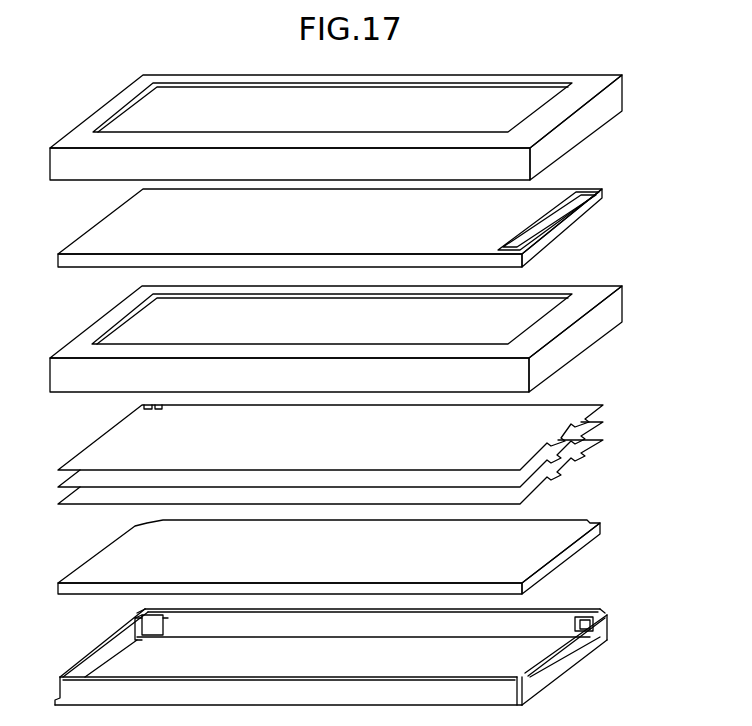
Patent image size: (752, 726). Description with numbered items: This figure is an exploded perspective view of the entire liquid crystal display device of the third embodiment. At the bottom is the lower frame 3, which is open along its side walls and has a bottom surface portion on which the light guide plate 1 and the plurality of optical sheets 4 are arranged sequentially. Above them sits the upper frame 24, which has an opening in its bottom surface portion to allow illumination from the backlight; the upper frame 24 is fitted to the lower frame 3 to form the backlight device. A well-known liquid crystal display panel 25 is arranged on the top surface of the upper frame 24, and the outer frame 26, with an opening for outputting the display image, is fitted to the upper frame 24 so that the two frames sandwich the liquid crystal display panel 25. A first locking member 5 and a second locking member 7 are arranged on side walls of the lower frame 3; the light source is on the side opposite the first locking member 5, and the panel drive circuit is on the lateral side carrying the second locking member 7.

The outer frame 26 is at (608, 98).
The liquid crystal display panel 25 is at (605, 190).
The upper frame 24 is at (612, 312).
The optical sheets 4 is at (618, 395).
The light guide plate 1 is at (602, 528).
The lower frame 3 is at (598, 632).
The first locking member 5 is at (135, 628).
The second locking member 7 is at (592, 612).